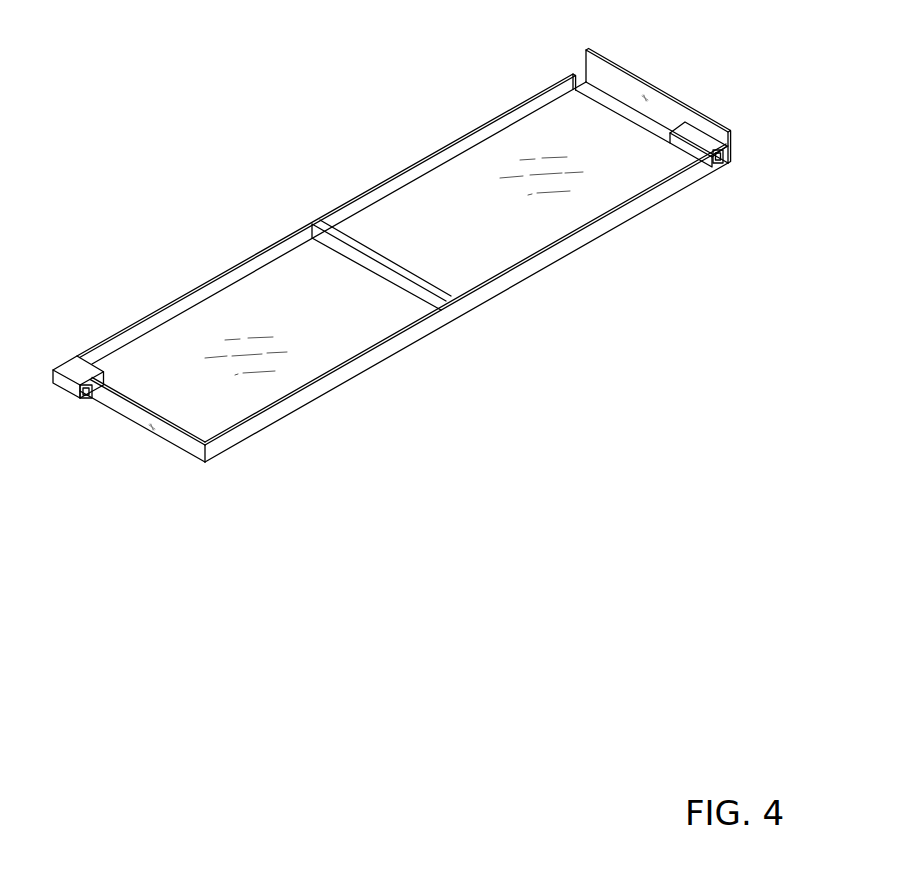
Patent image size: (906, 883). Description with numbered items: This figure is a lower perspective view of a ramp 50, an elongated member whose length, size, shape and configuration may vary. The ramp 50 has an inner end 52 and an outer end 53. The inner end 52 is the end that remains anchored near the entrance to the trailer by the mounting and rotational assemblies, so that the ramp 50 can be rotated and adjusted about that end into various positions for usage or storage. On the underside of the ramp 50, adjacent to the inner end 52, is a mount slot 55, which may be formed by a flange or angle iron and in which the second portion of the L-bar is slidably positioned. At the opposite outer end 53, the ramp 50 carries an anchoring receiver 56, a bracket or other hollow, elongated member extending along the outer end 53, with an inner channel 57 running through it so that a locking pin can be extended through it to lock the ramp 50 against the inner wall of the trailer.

The ramp 50 is at (383, 181).
The inner end 52 is at (652, 85).
The outer end 53 is at (167, 443).
The mount slot 55 is at (720, 165).
The anchoring receiver 56 is at (53, 395).
The inner channel 57 is at (88, 399).